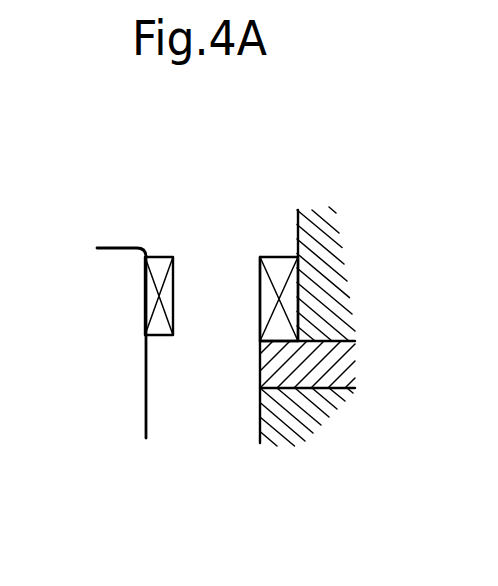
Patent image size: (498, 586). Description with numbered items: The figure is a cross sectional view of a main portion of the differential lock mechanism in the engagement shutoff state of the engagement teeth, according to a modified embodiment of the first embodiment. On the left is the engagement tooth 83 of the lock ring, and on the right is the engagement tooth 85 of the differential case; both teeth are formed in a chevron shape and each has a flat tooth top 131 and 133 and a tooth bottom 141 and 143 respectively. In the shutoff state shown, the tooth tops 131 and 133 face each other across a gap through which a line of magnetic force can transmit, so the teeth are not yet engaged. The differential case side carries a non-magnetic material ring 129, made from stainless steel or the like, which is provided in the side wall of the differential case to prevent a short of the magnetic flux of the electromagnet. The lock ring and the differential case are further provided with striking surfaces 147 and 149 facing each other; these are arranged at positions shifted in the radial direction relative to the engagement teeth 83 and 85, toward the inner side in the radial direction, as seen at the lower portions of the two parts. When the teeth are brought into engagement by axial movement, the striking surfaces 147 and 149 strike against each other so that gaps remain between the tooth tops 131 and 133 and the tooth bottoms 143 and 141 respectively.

The engagement tooth 83 is at (153, 248).
The tooth top 131 is at (173, 298).
The tooth bottom 141 is at (152, 290).
The striking surface 147 is at (148, 387).
The engagement tooth 85 is at (280, 248).
The tooth top 133 is at (258, 296).
The tooth bottom 143 is at (296, 293).
The non-magnetic material ring 129 is at (332, 340).
The striking surface 149 is at (260, 415).